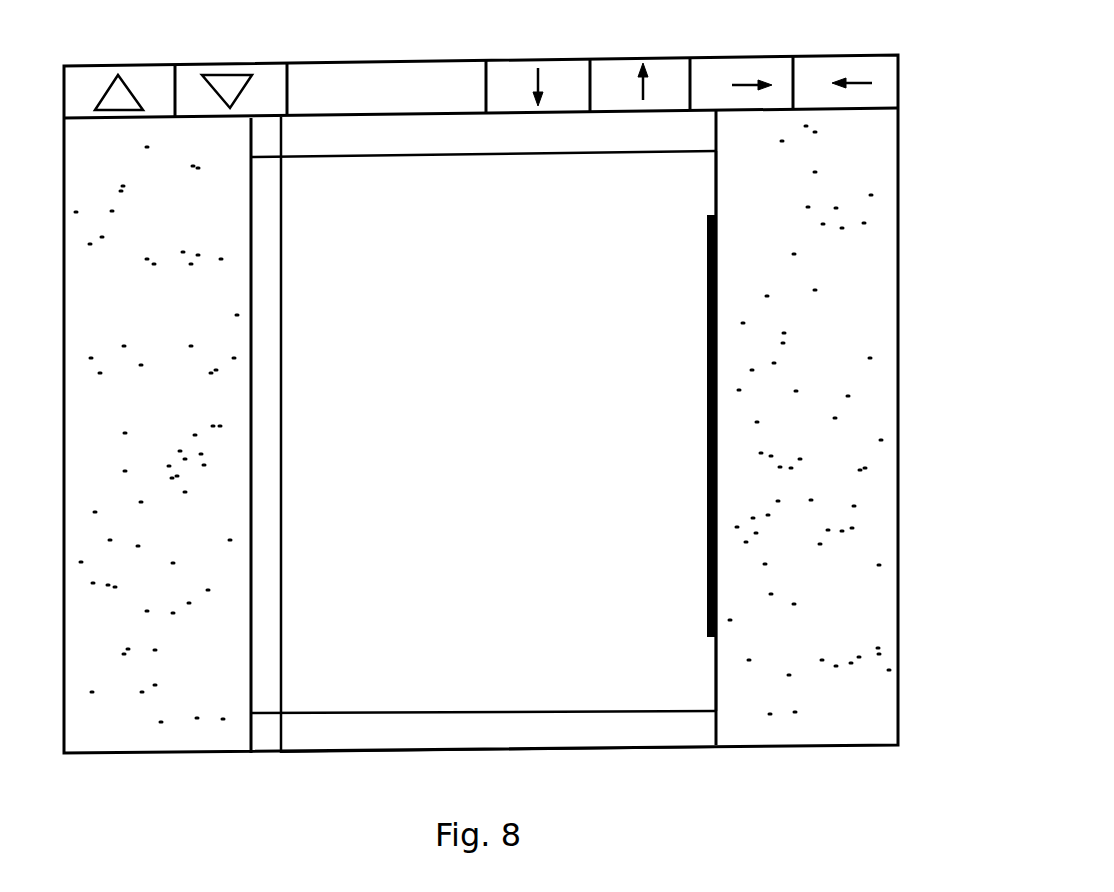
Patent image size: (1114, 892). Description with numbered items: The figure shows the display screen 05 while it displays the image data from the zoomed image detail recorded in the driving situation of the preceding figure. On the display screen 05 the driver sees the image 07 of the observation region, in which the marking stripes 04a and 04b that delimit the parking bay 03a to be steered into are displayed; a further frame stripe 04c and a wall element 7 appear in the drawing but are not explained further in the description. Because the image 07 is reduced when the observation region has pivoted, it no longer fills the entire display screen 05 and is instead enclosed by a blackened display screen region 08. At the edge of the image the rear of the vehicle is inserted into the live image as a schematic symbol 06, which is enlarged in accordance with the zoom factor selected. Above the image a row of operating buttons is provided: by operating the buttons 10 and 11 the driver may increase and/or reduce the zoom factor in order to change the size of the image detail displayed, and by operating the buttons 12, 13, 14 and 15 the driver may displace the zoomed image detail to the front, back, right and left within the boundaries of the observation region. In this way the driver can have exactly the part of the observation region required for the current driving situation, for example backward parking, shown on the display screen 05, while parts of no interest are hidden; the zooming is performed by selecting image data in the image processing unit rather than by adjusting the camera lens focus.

The display screen 05 is at (1017, 183).
The button 10 is at (147, 82).
The button 11 is at (270, 78).
The button 12 is at (562, 78).
The button 13 is at (670, 78).
The button 14 is at (761, 72).
The button 15 is at (860, 70).
The left wall panel 7 is at (163, 435).
The blackened display screen region 08 is at (803, 427).
The marking stripe 04a is at (458, 157).
The marking stripe 04b is at (378, 712).
The left frame bar 04c is at (282, 412).
The parking bay 03a is at (560, 437).
The image 07 is at (545, 693).
The symbol 06 is at (707, 563).